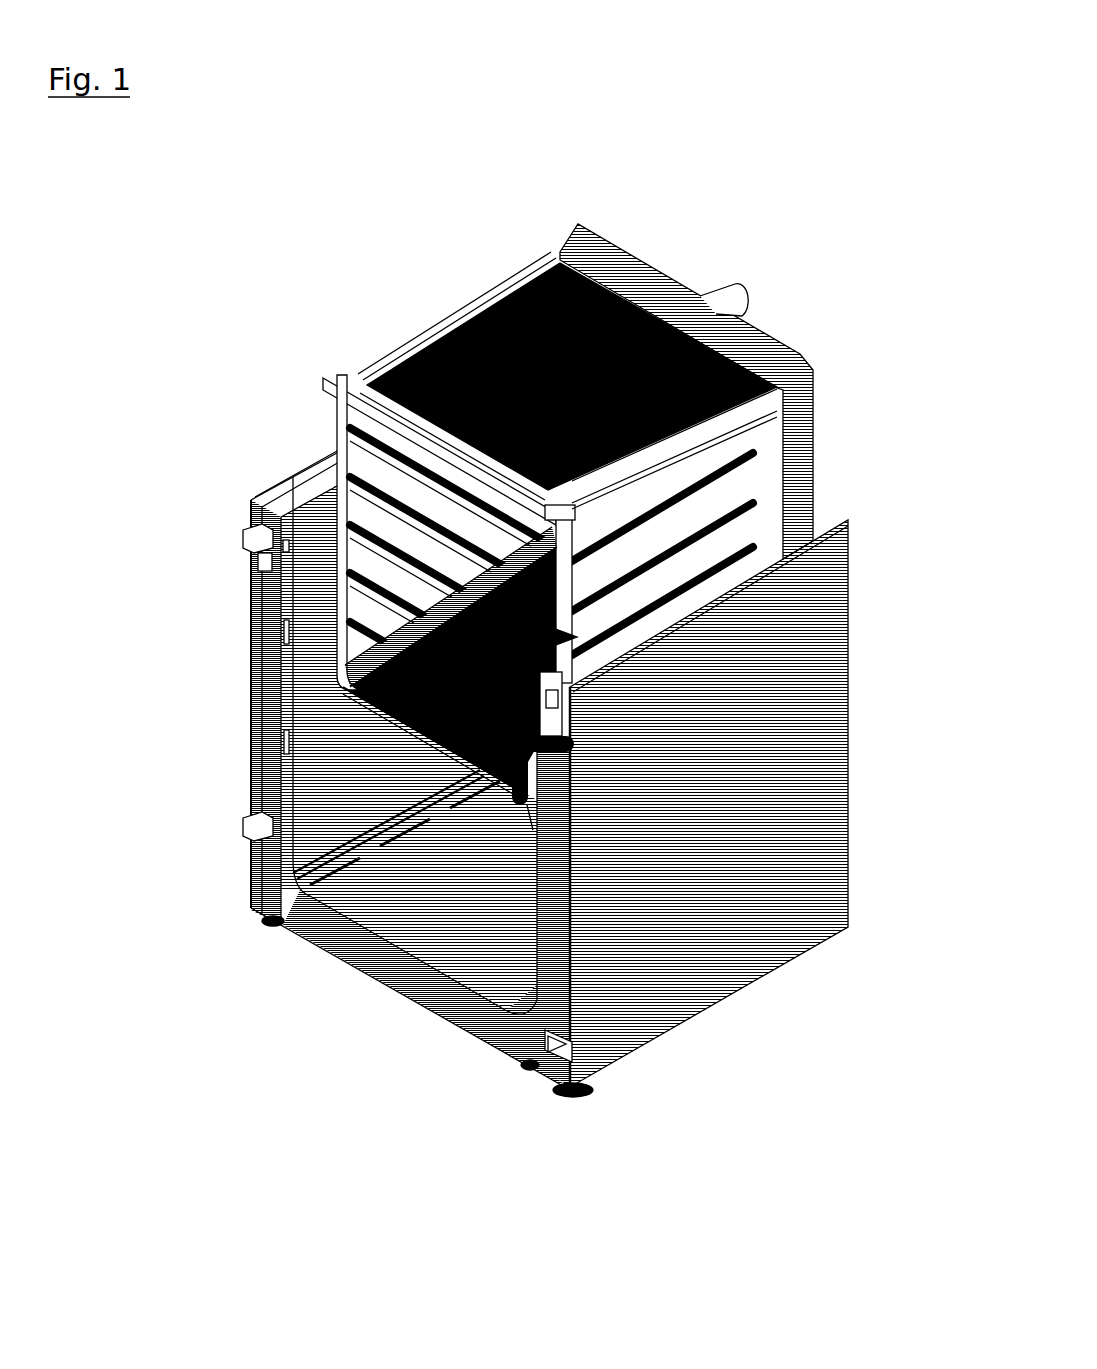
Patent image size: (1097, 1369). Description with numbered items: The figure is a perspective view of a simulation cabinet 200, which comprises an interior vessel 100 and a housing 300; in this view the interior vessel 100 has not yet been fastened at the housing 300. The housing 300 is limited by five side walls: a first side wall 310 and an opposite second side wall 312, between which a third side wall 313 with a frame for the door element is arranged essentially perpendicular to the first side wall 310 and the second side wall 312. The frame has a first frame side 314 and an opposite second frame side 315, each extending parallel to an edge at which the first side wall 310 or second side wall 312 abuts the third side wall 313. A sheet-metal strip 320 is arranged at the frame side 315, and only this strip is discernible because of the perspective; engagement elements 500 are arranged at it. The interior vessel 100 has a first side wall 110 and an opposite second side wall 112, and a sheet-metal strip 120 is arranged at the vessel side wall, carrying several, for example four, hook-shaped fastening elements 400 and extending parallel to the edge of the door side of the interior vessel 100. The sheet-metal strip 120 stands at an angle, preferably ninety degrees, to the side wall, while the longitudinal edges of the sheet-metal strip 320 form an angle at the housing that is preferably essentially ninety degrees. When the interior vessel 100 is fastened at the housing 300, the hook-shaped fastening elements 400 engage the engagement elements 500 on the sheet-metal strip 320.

The interior vessel 100 is at (535, 446).
The first side wall 110 is at (710, 513).
The second side wall 112 is at (397, 363).
The sheet-metal strip 120 is at (580, 560).
The simulation cabinet 200 is at (503, 655).
The housing 300 is at (753, 920).
The first side wall 310 is at (740, 765).
The second side wall 312 is at (294, 518).
The third side wall 313 is at (383, 997).
The first frame side 314 is at (517, 1033).
The second frame side 315 is at (273, 928).
The sheet-metal strip 320 is at (252, 590).
The hook-shaped fastening elements 400 is at (340, 675).
The engagement elements 500 is at (249, 771).